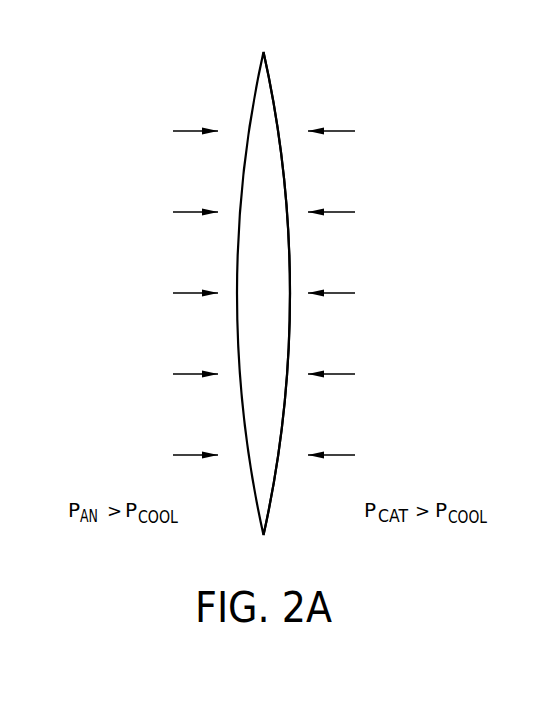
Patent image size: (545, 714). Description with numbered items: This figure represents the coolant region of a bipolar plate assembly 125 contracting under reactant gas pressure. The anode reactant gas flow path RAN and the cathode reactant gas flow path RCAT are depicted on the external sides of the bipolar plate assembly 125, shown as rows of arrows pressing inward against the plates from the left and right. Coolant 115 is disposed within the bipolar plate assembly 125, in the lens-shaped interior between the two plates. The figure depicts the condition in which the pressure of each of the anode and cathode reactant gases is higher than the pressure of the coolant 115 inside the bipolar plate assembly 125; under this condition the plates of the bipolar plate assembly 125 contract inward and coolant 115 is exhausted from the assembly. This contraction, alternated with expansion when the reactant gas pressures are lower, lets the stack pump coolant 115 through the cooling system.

The coolant 115 is at (278, 268).
The bipolar plate assembly 125 is at (275, 102).
The anode reactant gas flow path RAN is at (168, 293).
The cathode reactant gas flow path RCAT is at (366, 293).